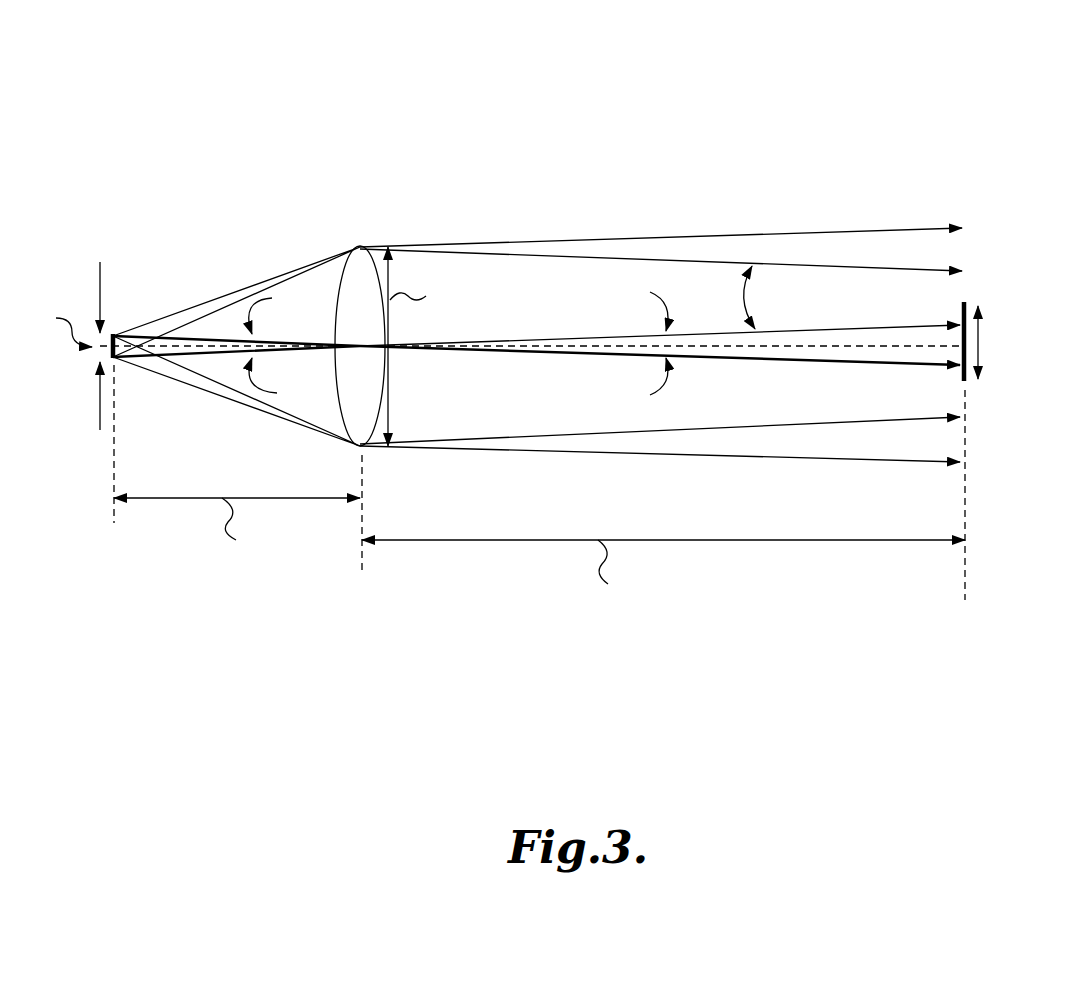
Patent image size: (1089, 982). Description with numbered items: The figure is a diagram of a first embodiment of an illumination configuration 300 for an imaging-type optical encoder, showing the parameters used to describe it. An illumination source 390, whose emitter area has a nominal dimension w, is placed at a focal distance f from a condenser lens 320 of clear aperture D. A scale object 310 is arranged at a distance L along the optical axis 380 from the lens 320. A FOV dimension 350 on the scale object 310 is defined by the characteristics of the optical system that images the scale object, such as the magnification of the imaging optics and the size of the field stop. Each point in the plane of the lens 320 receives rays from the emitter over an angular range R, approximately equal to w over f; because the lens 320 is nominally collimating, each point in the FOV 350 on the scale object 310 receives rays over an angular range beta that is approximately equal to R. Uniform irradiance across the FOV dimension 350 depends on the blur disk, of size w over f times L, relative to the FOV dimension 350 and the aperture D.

The illumination configuration 300 is at (944, 121).
The scale object 310 is at (965, 300).
The condenser lens 320 is at (360, 245).
The FOV dimension 350 is at (982, 343).
The optical axis 380 is at (862, 349).
The illumination source 390 is at (114, 335).